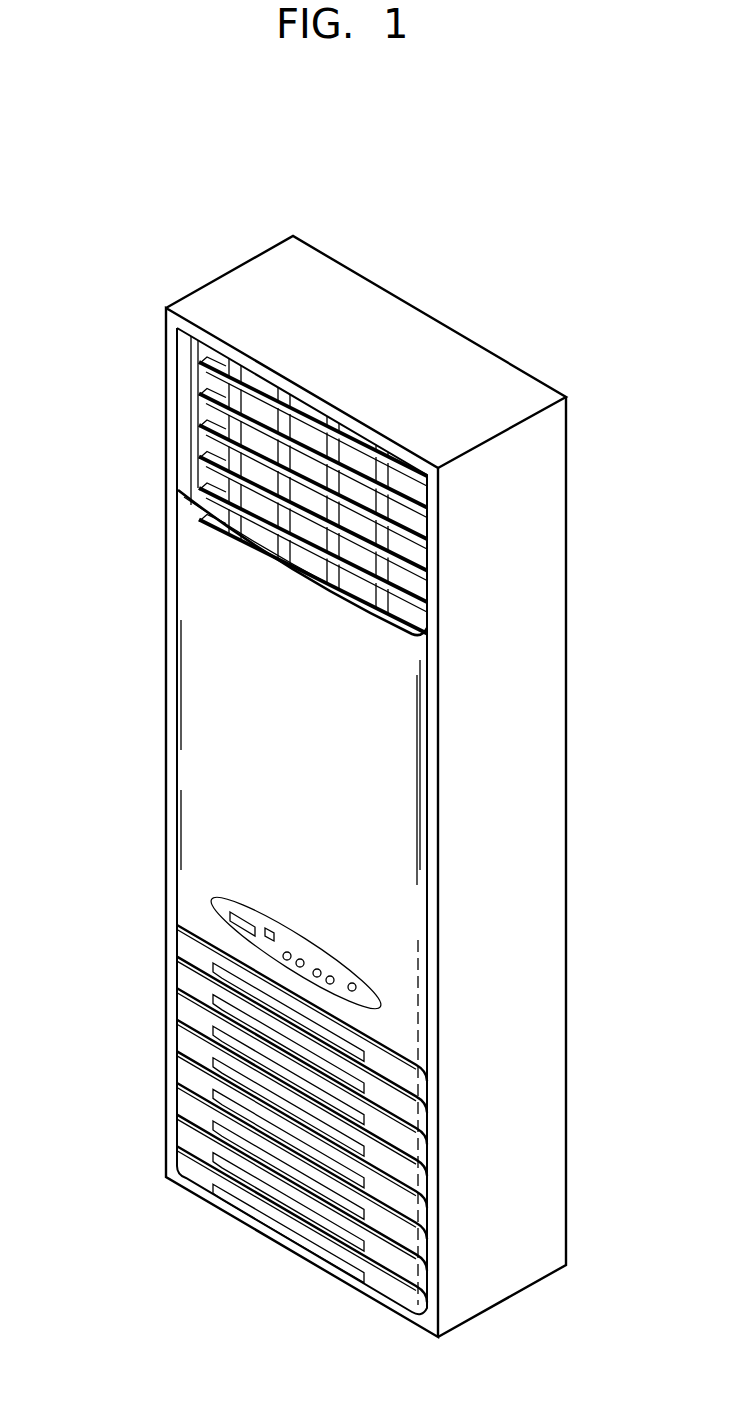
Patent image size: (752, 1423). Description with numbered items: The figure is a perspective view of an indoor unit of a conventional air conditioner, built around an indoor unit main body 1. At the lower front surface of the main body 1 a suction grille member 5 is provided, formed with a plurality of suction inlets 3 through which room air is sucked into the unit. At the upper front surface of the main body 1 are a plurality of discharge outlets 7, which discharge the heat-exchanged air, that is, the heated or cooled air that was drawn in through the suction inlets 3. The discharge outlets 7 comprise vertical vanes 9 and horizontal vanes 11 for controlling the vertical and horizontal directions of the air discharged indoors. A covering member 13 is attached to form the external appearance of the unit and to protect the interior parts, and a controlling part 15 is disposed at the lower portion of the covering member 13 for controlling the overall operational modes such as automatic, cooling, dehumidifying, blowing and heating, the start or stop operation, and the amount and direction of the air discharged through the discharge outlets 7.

The indoor unit main body 1 is at (537, 742).
The suction inlets 3 is at (233, 1102).
The suction grille member 5 is at (213, 1015).
The discharge outlets 7 is at (213, 443).
The vertical vanes 9 is at (207, 370).
The horizontal vanes 11 is at (203, 488).
The covering member 13 is at (205, 688).
The controlling part 15 is at (213, 908).